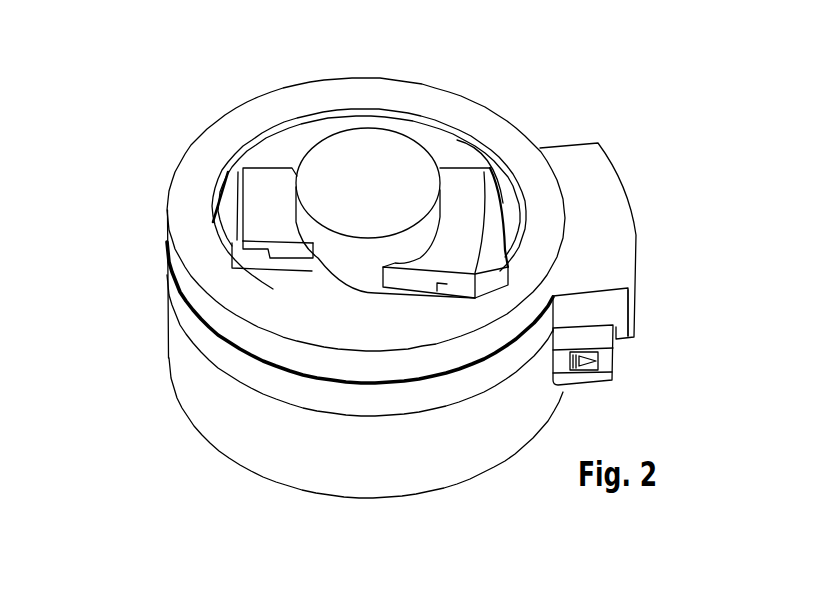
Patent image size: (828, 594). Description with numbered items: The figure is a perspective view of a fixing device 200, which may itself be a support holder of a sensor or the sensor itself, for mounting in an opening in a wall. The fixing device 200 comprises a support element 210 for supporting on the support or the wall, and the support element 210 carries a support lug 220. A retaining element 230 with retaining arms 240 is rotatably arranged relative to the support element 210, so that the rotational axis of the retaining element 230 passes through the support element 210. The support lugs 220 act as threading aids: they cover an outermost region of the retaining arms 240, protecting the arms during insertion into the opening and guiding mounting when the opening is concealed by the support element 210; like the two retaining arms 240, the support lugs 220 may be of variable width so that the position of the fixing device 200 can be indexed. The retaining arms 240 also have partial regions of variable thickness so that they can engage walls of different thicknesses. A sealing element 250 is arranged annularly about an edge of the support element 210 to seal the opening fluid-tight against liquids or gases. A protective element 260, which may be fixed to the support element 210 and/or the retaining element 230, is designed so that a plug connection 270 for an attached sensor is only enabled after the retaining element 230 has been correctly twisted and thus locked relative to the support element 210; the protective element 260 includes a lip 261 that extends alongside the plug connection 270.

The fixing device 200 is at (386, 264).
The support element 210 is at (182, 277).
The support lug 220 is at (226, 184).
The retaining element 230 is at (183, 352).
The retaining arms 240 is at (269, 190).
The sealing element 250 is at (183, 203).
The protective element 260 is at (612, 178).
The lip 261 is at (630, 322).
The plug connection 270 is at (612, 361).